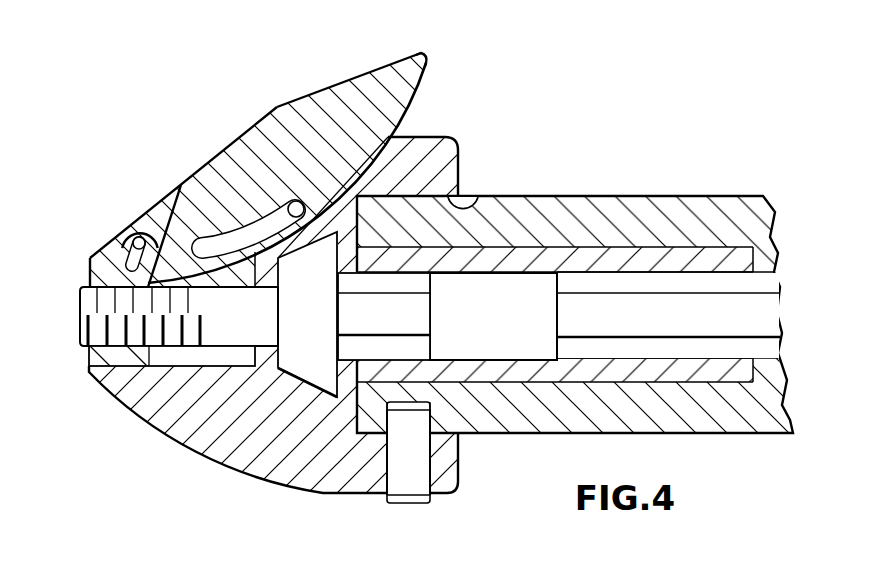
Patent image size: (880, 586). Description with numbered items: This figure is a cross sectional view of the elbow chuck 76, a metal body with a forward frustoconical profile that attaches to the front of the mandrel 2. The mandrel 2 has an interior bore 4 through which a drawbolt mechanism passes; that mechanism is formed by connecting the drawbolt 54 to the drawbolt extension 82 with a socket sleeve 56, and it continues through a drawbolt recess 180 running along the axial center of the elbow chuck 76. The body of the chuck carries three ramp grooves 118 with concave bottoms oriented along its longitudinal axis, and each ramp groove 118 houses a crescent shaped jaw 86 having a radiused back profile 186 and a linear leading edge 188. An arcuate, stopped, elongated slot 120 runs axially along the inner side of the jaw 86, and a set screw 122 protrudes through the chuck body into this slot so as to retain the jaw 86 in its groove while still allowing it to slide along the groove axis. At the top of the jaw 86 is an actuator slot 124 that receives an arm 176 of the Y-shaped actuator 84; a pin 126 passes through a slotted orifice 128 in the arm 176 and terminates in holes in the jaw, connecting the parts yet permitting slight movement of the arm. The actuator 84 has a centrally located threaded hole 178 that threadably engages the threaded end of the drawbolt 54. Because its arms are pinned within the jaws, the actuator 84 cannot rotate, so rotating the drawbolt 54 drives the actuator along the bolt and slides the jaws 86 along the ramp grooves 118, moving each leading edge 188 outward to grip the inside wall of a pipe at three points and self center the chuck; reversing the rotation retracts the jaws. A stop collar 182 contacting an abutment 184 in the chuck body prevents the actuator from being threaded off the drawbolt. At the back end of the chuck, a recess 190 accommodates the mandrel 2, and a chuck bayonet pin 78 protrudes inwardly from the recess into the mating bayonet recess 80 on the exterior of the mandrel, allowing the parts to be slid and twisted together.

The mandrel 2 is at (637, 195).
The interior bore 4 is at (662, 357).
The drawbolt 54 is at (88, 305).
The socket sleeve 56 is at (504, 324).
The elbow chuck 76 is at (210, 440).
The chuck bayonet pin 78 is at (408, 497).
The bayonet recess 80 is at (433, 403).
The drawbolt extension 82 is at (747, 310).
The actuator 84 is at (88, 267).
The jaw 86 is at (305, 103).
The ramp groove 118 is at (367, 170).
The elongated slot 120 is at (237, 232).
The set screw 122 is at (296, 202).
The actuator slot 124 is at (168, 213).
The pin 126 is at (137, 237).
The slotted orifice 128 is at (127, 240).
The actuator arm 176 is at (110, 237).
The threaded hole 178 is at (88, 330).
The drawbolt recess 180 is at (218, 365).
The stop collar 182 is at (322, 332).
The abutment 184 is at (263, 353).
The radiused back profile 186 is at (423, 90).
The linear leading edge 188 is at (425, 52).
The recess 190 is at (478, 197).